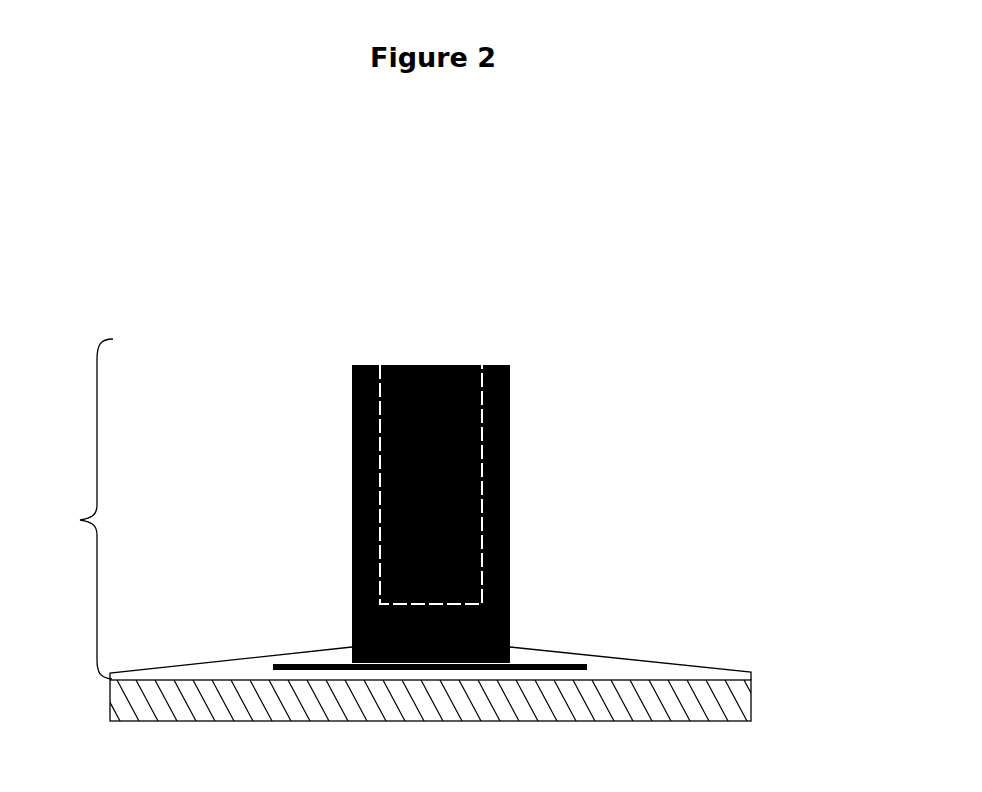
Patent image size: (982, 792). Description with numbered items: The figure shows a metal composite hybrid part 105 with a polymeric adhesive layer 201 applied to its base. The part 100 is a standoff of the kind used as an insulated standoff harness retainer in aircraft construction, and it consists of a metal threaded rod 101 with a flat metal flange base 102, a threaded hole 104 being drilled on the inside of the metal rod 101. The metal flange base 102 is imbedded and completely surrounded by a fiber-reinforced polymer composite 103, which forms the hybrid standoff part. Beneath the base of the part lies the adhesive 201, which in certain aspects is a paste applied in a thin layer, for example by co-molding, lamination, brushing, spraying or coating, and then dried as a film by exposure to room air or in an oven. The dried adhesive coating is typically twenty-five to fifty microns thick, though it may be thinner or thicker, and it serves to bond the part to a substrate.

The part 100 is at (572, 428).
The metal threaded rod 101 is at (512, 380).
The flat metal flange base 102 is at (541, 641).
The fiber-reinforced polymer composite 103 is at (698, 655).
The threaded hole 104 is at (473, 347).
The metal composite hybrid part 105 is at (72, 509).
The polymeric adhesive layer 201 is at (663, 732).